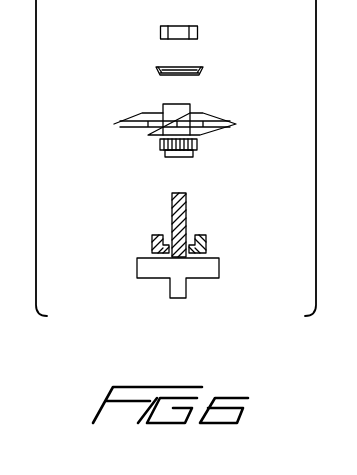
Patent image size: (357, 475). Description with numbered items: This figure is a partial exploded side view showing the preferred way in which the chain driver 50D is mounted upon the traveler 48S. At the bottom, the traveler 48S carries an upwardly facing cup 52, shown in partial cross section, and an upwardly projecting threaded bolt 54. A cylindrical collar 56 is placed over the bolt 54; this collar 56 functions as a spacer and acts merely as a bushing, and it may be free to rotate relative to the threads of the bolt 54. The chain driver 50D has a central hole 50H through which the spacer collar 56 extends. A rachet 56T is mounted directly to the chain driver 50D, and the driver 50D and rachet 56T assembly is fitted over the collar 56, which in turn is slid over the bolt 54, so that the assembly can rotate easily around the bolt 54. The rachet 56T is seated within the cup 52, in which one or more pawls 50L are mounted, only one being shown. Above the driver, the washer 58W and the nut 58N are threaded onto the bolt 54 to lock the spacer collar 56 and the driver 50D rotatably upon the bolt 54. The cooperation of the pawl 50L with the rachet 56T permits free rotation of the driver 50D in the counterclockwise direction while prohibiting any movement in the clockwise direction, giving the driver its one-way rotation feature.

The nut 58N is at (197, 33).
The washer 58W is at (203, 70).
The chain driver 50D is at (236, 123).
The central hole 50H is at (162, 117).
The cylindrical collar 56 is at (198, 152).
The rachet 56T is at (158, 141).
The bolt 54 is at (187, 212).
The cup 52 is at (152, 244).
The pawl 50L is at (194, 236).
The traveler 48S is at (219, 268).